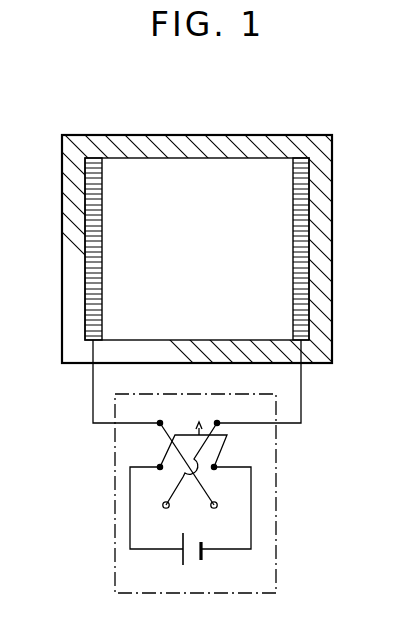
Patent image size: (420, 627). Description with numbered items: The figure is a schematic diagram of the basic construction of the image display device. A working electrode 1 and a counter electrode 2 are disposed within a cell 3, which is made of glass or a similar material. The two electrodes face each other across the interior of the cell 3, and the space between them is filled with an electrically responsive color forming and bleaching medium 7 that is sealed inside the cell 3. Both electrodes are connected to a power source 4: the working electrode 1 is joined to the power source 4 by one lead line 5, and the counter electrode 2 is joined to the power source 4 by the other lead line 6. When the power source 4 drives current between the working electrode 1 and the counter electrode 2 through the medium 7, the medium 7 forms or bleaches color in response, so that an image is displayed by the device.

The working electrode 1 is at (93, 158).
The counter electrode 2 is at (300, 182).
The cell 3 is at (236, 130).
The power source 4 is at (260, 553).
The lead line 5 is at (91, 392).
The lead line 6 is at (310, 400).
The electrically responsive color forming and bleaching medium 7 is at (153, 178).